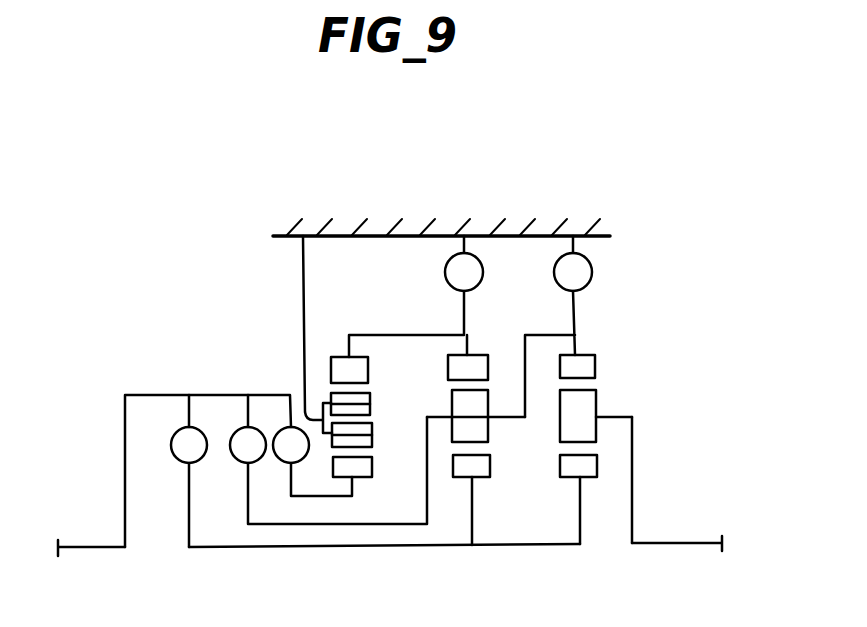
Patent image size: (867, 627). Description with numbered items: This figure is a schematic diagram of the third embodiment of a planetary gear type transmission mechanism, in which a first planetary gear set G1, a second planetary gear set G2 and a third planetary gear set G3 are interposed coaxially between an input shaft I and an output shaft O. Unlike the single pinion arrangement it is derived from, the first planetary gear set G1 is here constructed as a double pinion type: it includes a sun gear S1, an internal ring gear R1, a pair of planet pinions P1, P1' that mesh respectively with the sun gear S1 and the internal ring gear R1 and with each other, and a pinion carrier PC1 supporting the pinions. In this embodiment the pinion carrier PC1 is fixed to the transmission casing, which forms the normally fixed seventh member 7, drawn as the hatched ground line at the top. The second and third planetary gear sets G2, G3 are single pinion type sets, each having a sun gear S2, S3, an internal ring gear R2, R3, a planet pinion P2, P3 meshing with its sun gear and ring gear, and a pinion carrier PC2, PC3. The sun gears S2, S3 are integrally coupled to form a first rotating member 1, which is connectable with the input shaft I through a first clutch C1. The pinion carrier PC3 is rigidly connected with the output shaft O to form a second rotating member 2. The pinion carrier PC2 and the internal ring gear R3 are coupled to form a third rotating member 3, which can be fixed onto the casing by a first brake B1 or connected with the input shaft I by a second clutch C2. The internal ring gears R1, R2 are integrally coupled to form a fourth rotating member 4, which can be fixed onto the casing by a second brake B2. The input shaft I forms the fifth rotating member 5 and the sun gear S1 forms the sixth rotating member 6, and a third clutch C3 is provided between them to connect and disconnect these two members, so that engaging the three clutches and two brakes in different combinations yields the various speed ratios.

The seventh member 7 is at (416, 220).
The first brake B1 is at (592, 272).
The second brake B2 is at (445, 272).
The fourth rotating member 4 is at (470, 308).
The third rotating member 3 is at (580, 310).
The fifth rotating member 5 is at (259, 391).
The pinion carrier PC1 is at (304, 413).
The internal ring gear R1 is at (331, 356).
The planet pinion P1' is at (375, 385).
The planet pinion P1 is at (371, 441).
The sun gear S1 is at (372, 468).
The sixth rotating member 6 is at (312, 503).
The first planetary gear set G1 is at (369, 492).
The first clutch C1 is at (178, 462).
The second clutch C2 is at (237, 461).
The third clutch C3 is at (281, 462).
The input shaft I is at (84, 546).
The first rotating member 1 is at (456, 551).
The output shaft O is at (686, 542).
The second rotating member 2 is at (640, 509).
The internal ring gear R2 is at (488, 358).
The planet pinion P2 is at (503, 397).
The pinion carrier PC2 is at (492, 420).
The sun gear S2 is at (457, 478).
The second planetary gear set G2 is at (498, 491).
The internal ring gear R3 is at (595, 362).
The planet pinion P3 is at (596, 395).
The pinion carrier PC3 is at (622, 418).
The sun gear S3 is at (597, 465).
The third planetary gear set G3 is at (588, 507).